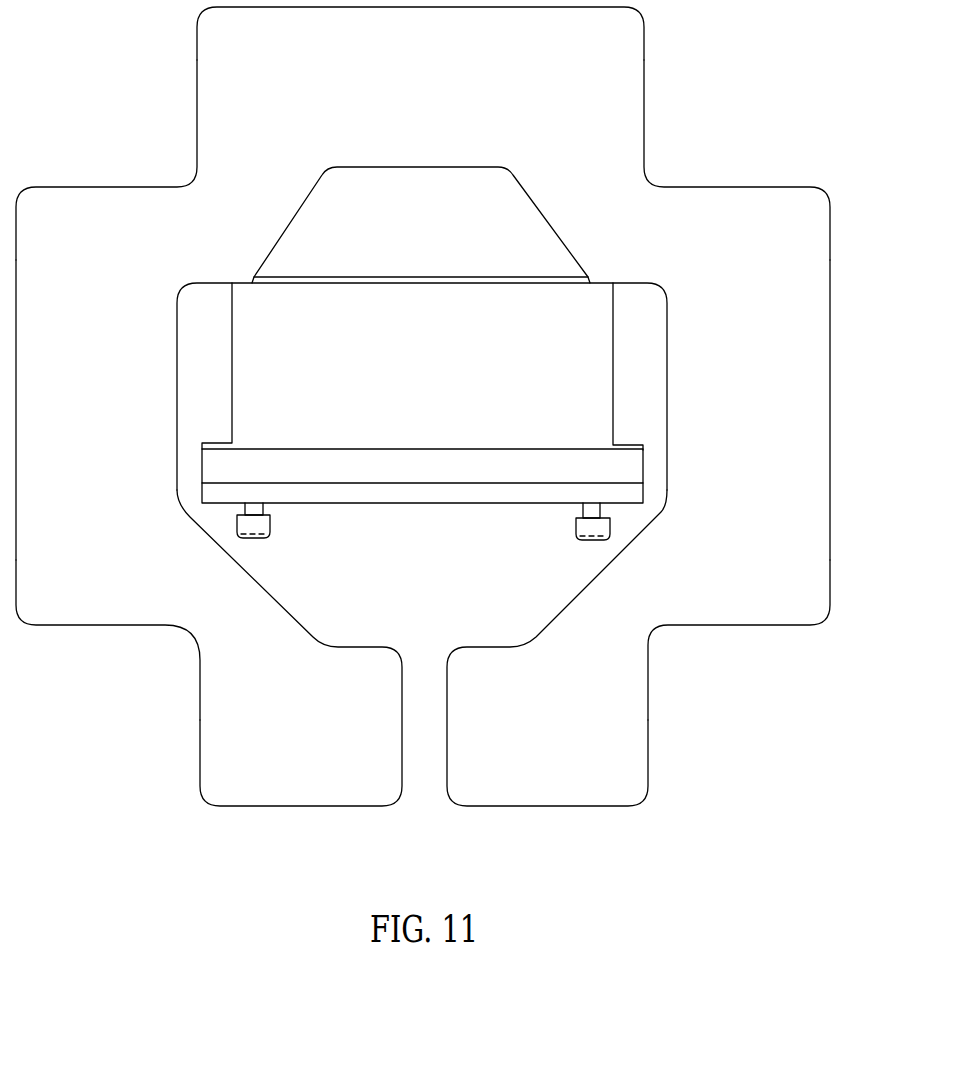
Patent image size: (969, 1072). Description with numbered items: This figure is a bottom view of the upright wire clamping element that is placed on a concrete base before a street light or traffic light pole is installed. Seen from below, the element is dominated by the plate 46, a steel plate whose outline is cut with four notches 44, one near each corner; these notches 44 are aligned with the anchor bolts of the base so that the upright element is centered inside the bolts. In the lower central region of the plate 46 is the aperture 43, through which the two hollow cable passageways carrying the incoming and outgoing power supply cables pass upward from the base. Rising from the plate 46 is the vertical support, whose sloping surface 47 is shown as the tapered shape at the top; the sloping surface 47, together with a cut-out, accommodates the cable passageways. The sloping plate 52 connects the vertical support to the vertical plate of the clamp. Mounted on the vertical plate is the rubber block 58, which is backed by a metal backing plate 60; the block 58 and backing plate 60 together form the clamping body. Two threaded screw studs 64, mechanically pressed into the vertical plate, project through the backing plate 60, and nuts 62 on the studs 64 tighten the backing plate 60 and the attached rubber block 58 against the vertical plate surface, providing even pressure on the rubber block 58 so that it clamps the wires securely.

The aperture 43 is at (432, 602).
The notches 44 is at (140, 135).
The plate 46 is at (822, 523).
The sloping surface 47 is at (527, 240).
The sloping plate 52 is at (595, 407).
The rubber block 58 is at (207, 470).
The metal backing plate 60 is at (207, 492).
The nuts 62 is at (243, 533).
The threaded screw studs 64 is at (238, 517).